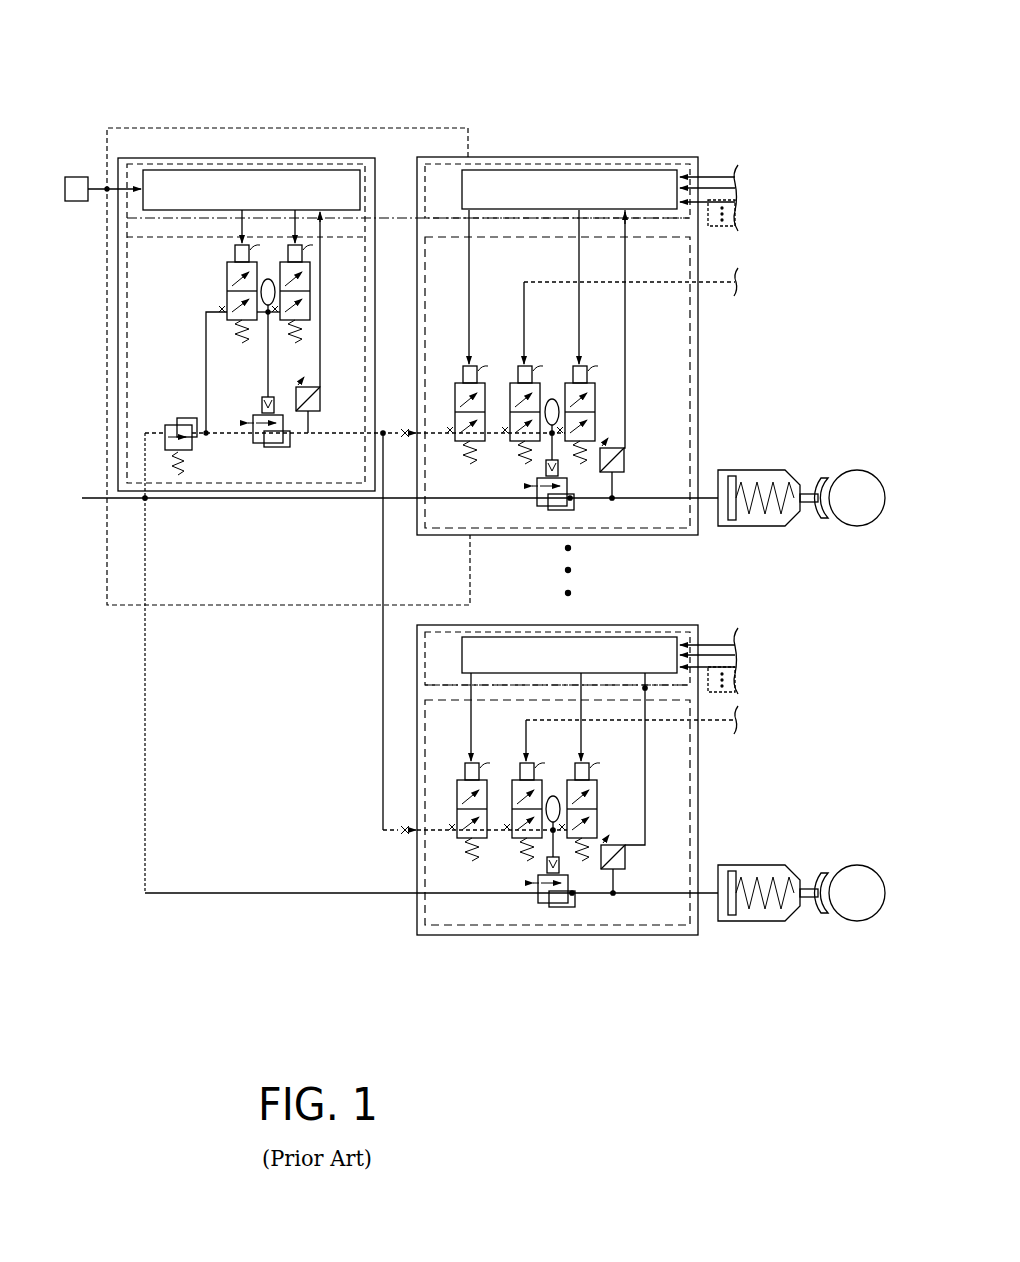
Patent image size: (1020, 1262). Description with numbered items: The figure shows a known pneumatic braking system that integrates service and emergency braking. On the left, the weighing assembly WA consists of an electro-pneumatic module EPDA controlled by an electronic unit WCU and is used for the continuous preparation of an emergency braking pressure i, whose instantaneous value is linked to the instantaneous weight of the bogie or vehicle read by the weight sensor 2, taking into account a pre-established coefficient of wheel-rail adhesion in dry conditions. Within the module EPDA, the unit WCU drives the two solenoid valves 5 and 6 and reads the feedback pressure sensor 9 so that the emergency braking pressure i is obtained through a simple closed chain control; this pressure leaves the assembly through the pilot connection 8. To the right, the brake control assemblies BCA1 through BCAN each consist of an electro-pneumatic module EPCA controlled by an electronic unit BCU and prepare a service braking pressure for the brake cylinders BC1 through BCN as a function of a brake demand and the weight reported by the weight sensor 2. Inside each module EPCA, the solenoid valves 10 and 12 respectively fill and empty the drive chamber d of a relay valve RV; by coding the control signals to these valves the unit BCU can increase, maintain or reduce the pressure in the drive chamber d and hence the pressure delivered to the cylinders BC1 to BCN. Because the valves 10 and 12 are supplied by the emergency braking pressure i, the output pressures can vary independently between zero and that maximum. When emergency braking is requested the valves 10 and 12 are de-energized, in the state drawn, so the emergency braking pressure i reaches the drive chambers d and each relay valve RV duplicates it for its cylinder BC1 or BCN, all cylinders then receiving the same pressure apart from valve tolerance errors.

The weight sensor 2 is at (76, 175).
The electronic unit WCU is at (151, 181).
The solenoid valve 5 is at (216, 270).
The solenoid valve 6 is at (273, 270).
The weighing assembly WA is at (257, 155).
The electro-pneumatic module EPDA is at (370, 290).
The feedback pressure sensor 9 is at (293, 393).
The electronic unit BCU is at (470, 187).
The brake control assembly BCA1 is at (590, 154).
The brake control assembly BCAN is at (636, 616).
The electro-pneumatic module EPCA is at (670, 235).
The solenoid valve 10 is at (456, 395).
The solenoid valve 12 is at (597, 388).
The relay valve RV is at (537, 500).
The drive chamber d is at (566, 464).
The emergency braking pressure i is at (410, 440).
The pilot pressure input 8 is at (407, 834).
The brake cylinder BC1 is at (801, 474).
The brake cylinder BCN is at (801, 868).